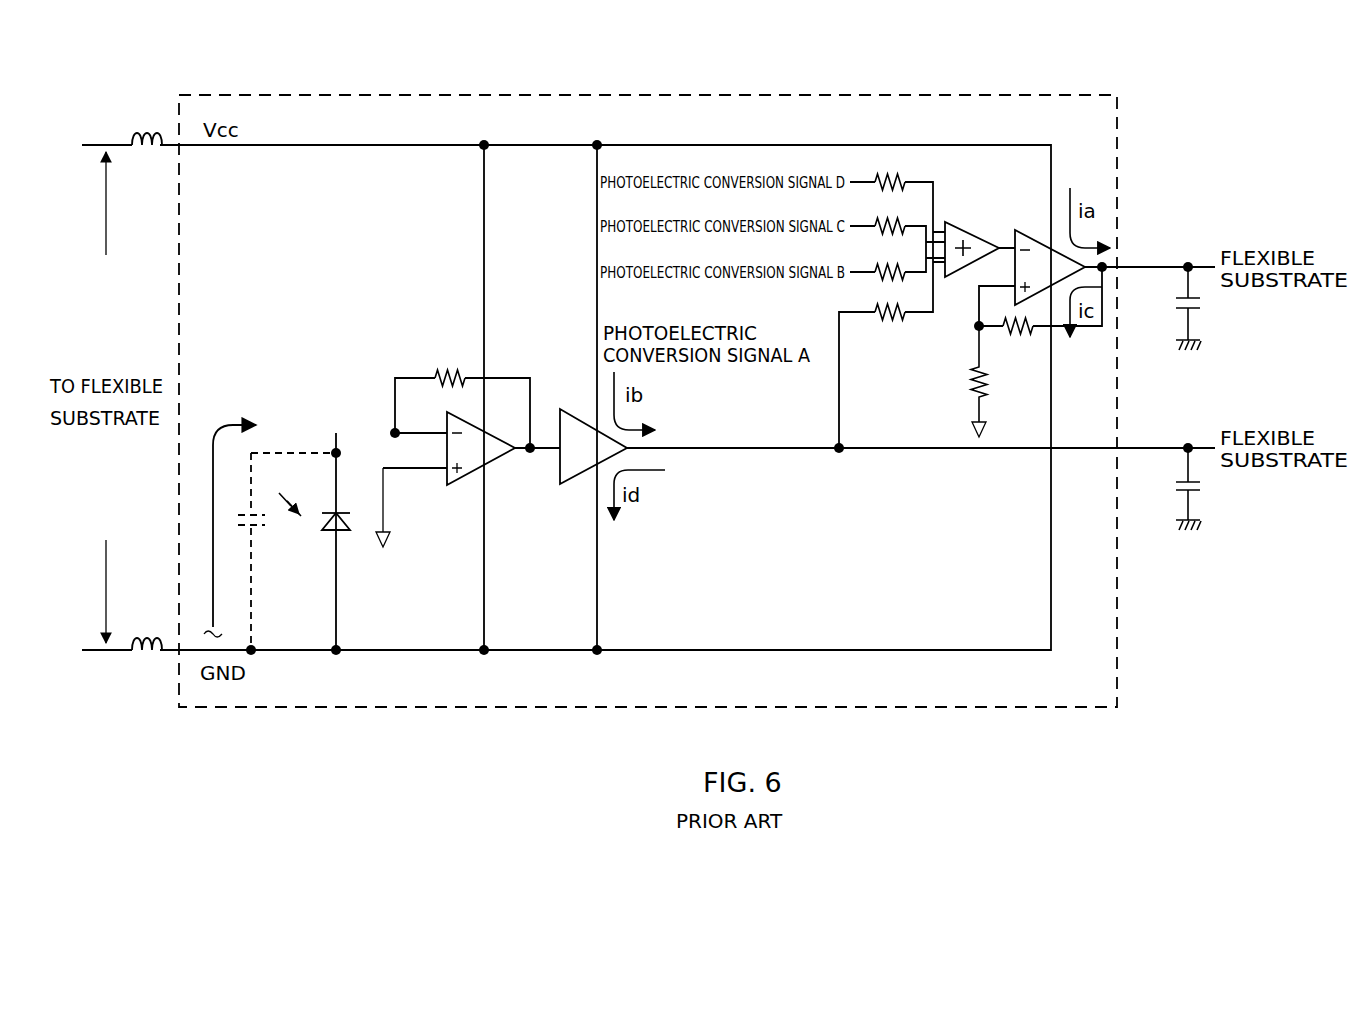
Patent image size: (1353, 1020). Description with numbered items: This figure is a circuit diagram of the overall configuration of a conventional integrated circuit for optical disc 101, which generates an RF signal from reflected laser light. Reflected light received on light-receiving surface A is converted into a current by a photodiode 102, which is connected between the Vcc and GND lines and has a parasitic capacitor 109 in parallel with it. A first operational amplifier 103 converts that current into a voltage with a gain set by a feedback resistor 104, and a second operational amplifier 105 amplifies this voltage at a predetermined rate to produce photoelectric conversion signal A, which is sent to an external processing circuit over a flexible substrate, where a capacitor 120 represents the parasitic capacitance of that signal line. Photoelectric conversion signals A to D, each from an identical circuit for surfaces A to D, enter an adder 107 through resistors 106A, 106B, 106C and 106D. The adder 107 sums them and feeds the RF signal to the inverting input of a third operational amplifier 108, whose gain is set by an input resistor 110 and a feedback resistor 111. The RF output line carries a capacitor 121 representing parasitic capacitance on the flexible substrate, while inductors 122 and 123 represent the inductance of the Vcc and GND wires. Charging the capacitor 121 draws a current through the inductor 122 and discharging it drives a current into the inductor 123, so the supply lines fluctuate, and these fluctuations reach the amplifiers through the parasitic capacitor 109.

The integrated circuit for optical disc 101 is at (1117, 148).
The photodiode 102 is at (326, 535).
The first operational amplifier 103 is at (490, 470).
The feedback resistor 104 is at (450, 366).
The second operational amplifier 105 is at (578, 486).
The resistor 106A is at (890, 322).
The resistor 106B is at (882, 281).
The resistor 106C is at (880, 218).
The resistor 106D is at (891, 170).
The adder 107 is at (984, 214).
The third operational amplifier 108 is at (1033, 232).
The parasitic capacitor 109 is at (268, 524).
The input resistor 110 is at (974, 382).
The feedback resistor 111 is at (1018, 336).
The capacitor 120 is at (1176, 484).
The capacitor 121 is at (1176, 300).
The inductor 122 is at (146, 136).
The inductor 123 is at (144, 642).